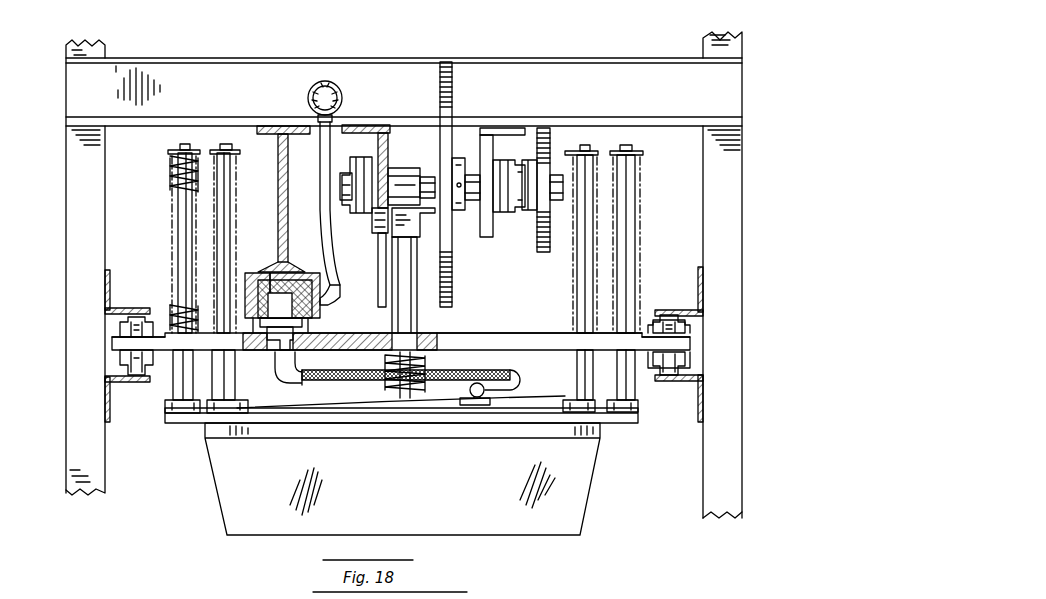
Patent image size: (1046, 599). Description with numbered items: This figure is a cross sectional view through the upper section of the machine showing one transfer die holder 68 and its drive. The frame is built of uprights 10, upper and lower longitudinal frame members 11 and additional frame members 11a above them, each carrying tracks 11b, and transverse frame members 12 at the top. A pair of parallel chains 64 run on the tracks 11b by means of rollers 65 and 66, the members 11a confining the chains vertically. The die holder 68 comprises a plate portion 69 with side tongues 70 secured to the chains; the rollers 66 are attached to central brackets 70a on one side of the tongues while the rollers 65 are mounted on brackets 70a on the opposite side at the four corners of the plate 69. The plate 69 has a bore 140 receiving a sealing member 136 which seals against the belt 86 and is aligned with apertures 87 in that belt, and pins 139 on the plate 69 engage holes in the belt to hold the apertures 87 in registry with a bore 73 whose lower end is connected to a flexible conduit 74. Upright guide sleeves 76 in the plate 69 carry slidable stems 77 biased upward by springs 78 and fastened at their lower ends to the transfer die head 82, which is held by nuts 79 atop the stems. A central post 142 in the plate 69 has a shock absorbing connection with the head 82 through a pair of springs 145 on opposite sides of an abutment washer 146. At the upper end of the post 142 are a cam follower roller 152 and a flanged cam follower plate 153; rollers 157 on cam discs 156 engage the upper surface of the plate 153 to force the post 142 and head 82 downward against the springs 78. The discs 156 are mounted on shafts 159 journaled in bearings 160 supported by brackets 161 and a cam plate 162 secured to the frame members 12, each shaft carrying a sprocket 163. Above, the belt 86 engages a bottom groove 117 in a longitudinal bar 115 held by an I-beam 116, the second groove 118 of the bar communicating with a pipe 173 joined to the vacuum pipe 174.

The frame upright 10 is at (735, 165).
The longitudinal frame member 11 is at (105, 402).
The additional frame member 11a is at (108, 270).
The track 11b is at (105, 316).
The transverse frame member 12 is at (205, 58).
The parallel chain 64 is at (692, 323).
The roller 65 is at (137, 378).
The roller 66 is at (137, 317).
The transfer die holder 68 is at (171, 474).
The plate portion 69 is at (552, 345).
The side tongue 70 is at (112, 345).
The bracket 70a is at (120, 335).
The bore 73 is at (298, 380).
The flexible conduit 74 is at (360, 378).
The upright guide sleeve 76 is at (173, 382).
The stem 77 is at (222, 228).
The spring 78 is at (172, 165).
The nut 79 is at (232, 148).
The transfer die head 82 is at (590, 470).
The belt 86 is at (342, 294).
The aperture 87 is at (280, 305).
The longitudinal bar 115 is at (318, 290).
The I-beam 116 is at (278, 185).
The bottom groove 117 is at (248, 273).
The second groove or channel 118 is at (285, 292).
The sealing member 136 is at (265, 352).
The pin 139 is at (310, 323).
The bore 140 is at (293, 336).
The central sleeve or post 142 is at (420, 315).
The spring 145 is at (425, 362).
The abutment washer 146 is at (380, 390).
The cam follower roller 152 is at (380, 235).
The flanged cam follower plate 153 is at (425, 218).
The cam disc 156 is at (452, 76).
The roller 157 is at (428, 175).
The shaft 159 is at (460, 158).
The bearing 160 is at (360, 160).
The bracket 161 is at (500, 128).
The cam plate 162 is at (385, 130).
The sprocket 163 is at (550, 140).
The pipe 173 is at (320, 152).
The vacuum pipe 174 is at (327, 81).